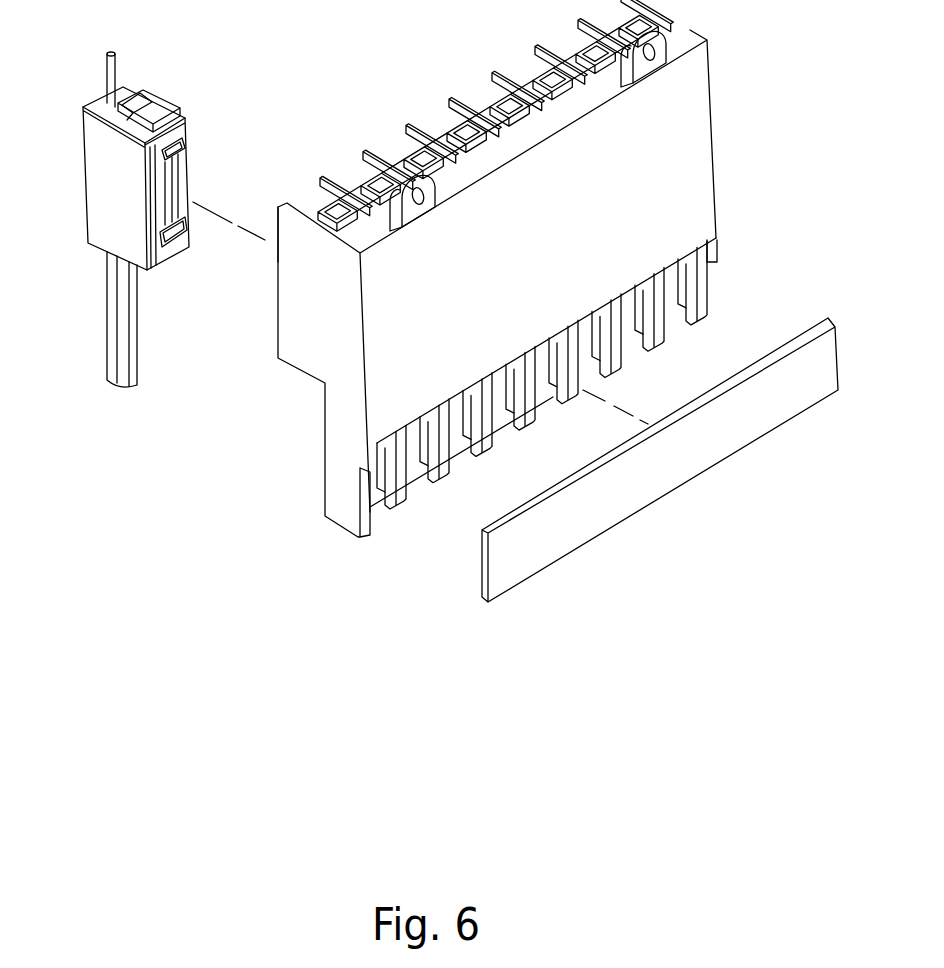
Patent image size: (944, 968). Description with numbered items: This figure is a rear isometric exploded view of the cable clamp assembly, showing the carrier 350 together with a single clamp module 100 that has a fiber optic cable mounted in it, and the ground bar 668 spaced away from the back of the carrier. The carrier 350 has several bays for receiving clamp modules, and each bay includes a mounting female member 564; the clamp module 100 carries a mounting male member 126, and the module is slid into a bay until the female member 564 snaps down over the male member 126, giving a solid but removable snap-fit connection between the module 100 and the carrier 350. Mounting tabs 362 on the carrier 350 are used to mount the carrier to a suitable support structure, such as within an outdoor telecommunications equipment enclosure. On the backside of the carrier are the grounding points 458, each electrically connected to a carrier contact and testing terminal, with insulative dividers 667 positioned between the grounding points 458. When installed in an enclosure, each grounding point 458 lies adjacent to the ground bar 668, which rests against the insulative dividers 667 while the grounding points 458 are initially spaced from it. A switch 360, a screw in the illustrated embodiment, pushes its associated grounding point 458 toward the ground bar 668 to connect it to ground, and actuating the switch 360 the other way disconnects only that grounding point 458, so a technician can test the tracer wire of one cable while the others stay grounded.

The clamp module 100 is at (83, 146).
The mounting male member 126 is at (138, 108).
The carrier 350 is at (772, 60).
The switch 360 is at (380, 497).
The mounting tab 362 is at (668, 30).
The grounding point 458 is at (392, 503).
The mounting female member 564 is at (534, 72).
The insulative divider 667 is at (448, 487).
The ground bar 668 is at (548, 552).